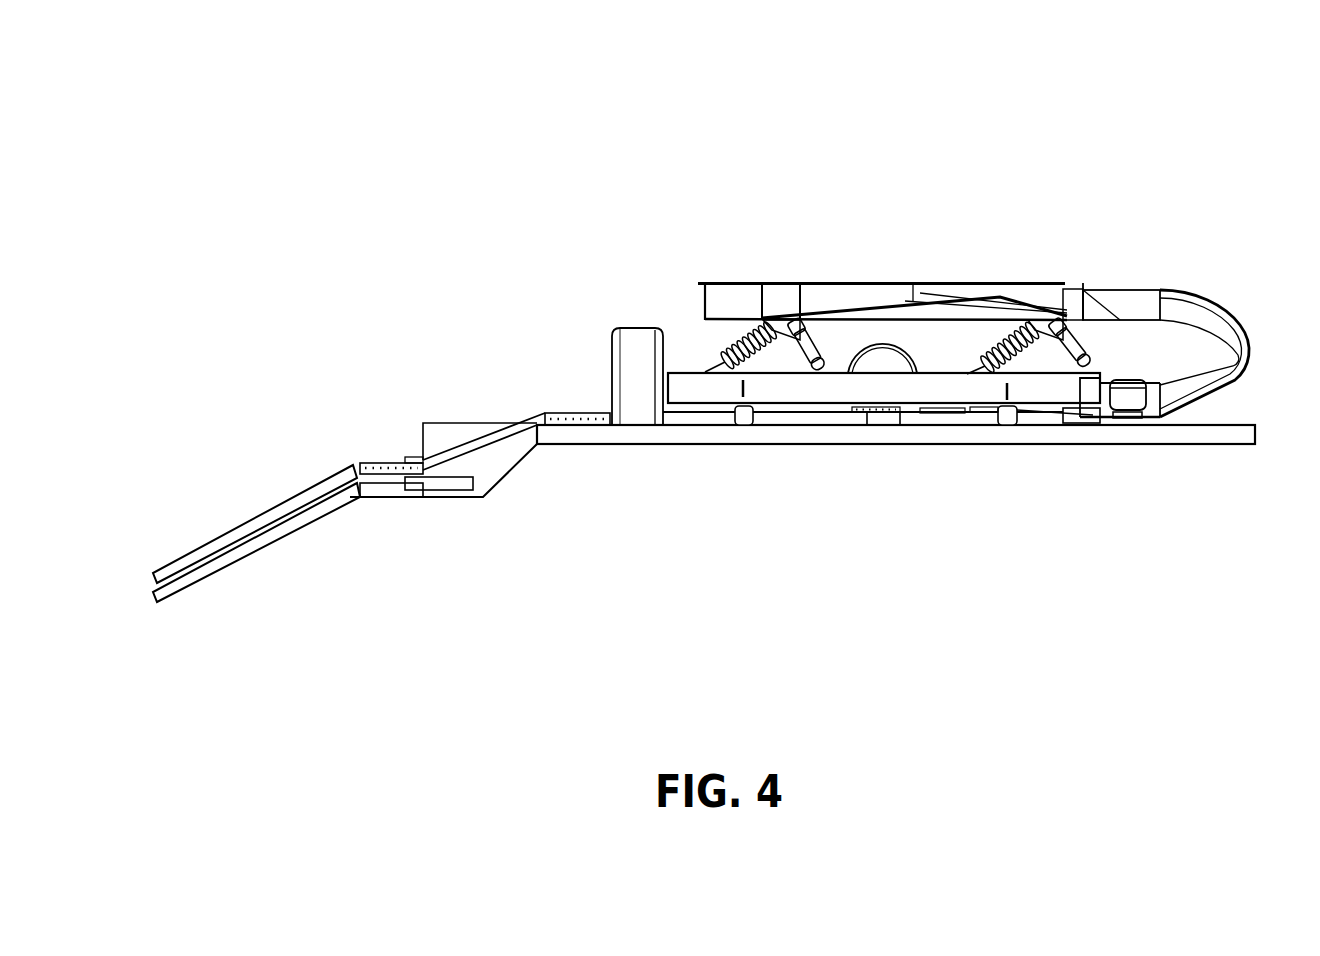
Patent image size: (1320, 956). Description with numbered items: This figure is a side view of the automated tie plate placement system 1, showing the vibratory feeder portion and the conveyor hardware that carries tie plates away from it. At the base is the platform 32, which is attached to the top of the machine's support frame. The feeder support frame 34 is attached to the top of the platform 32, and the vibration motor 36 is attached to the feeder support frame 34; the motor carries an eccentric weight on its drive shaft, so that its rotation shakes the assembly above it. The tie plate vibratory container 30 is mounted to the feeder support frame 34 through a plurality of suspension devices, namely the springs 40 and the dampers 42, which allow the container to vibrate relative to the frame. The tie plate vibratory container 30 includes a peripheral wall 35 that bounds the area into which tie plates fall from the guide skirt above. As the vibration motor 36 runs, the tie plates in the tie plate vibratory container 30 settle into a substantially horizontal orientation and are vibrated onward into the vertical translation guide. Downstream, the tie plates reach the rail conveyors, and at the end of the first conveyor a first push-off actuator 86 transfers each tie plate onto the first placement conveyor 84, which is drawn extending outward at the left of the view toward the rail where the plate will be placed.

The automated tie plate placement system 1 is at (380, 163).
The tie plate vibratory container 30 is at (716, 284).
The peripheral wall 35 is at (853, 296).
The dampers 42 is at (1077, 344).
The springs 40 is at (1020, 347).
The feeder support frame 34 is at (778, 390).
The vibration motor 36 is at (882, 358).
The platform 32 is at (980, 433).
The first push-off actuator 86 is at (242, 528).
The first placement conveyor 84 is at (217, 560).